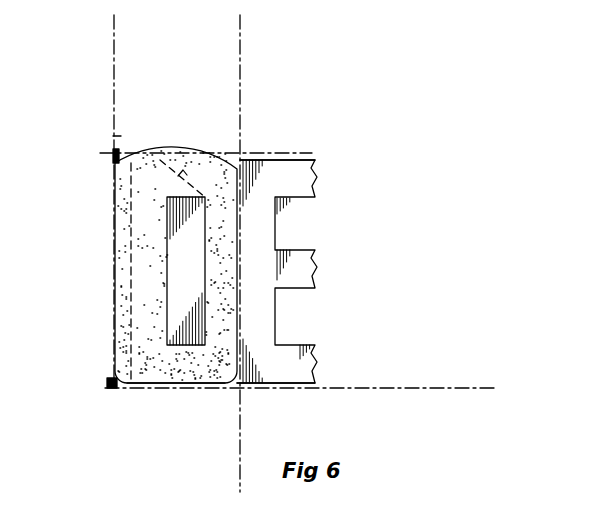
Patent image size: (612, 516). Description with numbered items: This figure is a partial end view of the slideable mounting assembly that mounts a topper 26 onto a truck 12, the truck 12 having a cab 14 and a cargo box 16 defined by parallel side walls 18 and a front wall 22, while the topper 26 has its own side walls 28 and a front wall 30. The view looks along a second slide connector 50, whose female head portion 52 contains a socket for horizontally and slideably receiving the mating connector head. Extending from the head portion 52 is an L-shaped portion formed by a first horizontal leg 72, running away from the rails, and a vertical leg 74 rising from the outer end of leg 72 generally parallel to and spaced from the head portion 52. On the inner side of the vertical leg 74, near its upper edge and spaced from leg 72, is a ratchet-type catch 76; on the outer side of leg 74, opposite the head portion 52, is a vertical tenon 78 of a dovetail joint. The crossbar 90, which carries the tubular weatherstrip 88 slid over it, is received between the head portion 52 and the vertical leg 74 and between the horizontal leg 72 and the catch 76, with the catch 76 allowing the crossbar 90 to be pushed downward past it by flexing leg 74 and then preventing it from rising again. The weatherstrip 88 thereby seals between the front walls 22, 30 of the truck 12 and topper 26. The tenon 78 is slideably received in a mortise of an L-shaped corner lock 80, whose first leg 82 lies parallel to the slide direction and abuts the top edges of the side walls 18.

The truck 12 is at (114, 26).
The cab 14 is at (114, 121).
The cargo box 16 is at (487, 387).
The side walls 18 is at (282, 428).
The front wall 22 is at (239, 469).
The topper 26 is at (240, 52).
The side walls 28 is at (296, 101).
The front wall 30 is at (240, 71).
The second slide connectors 50 is at (316, 159).
The female head portion 52 is at (303, 159).
The first horizontal leg 72 is at (186, 390).
The vertical leg 74 is at (131, 254).
The ratchet-type catch 76 is at (196, 165).
The vertical tenon 78 is at (113, 152).
The L-shaped corner locks 80 is at (131, 389).
The first leg 82 is at (296, 389).
The tubular weatherstrip 88 is at (113, 135).
The crossbar 90 is at (237, 230).